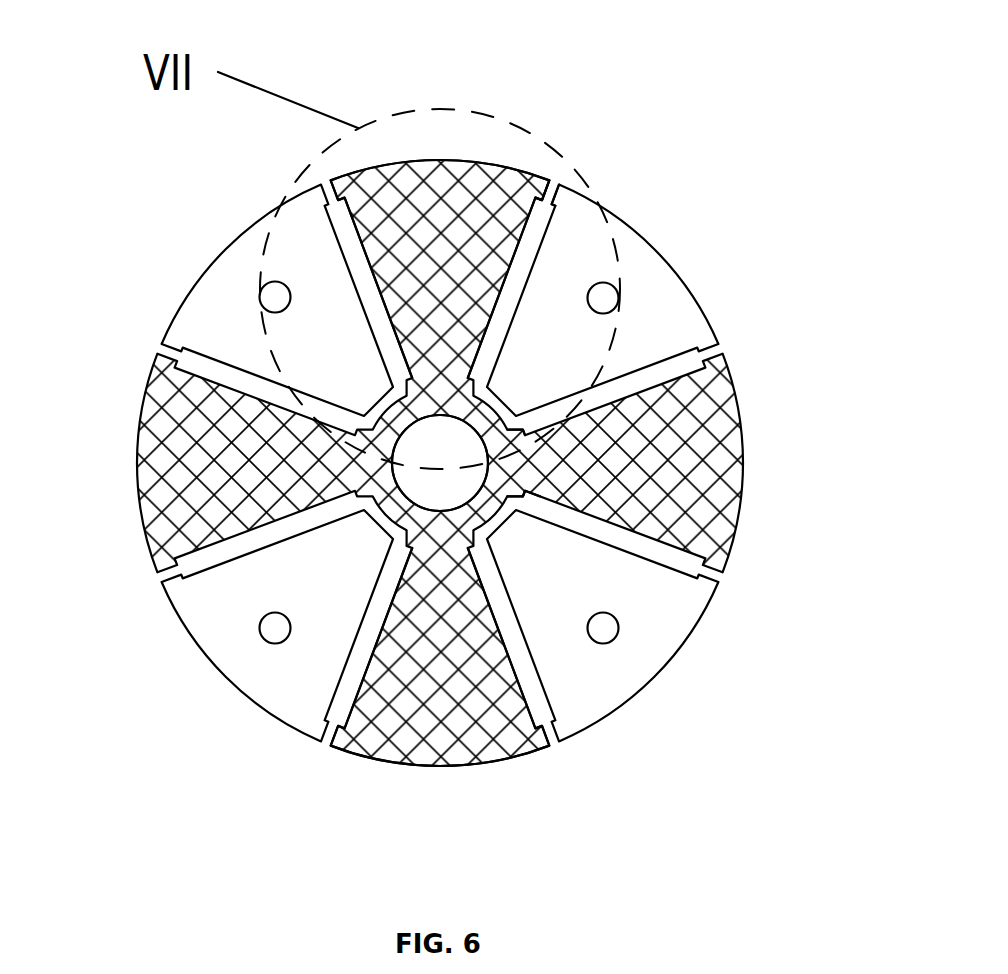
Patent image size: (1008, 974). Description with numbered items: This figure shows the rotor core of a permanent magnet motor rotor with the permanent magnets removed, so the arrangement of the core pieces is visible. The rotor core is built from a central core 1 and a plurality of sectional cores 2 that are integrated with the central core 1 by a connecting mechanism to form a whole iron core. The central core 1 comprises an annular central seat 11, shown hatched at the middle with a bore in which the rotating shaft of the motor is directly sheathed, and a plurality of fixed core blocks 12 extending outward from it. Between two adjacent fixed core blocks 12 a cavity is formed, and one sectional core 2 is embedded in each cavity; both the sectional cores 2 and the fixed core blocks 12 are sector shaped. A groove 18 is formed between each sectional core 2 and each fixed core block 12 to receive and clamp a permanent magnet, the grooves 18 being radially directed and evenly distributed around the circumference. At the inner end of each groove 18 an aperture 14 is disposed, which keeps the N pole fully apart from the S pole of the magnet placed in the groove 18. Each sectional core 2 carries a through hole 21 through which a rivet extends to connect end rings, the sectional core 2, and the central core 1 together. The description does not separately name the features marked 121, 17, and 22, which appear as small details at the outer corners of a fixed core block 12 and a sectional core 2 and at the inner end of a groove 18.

The central core 1 is at (235, 468).
The annular central seat 11 is at (497, 459).
The fixed core blocks 12 is at (417, 187).
The limiting protrusion 121 is at (538, 190).
The aperture 14 is at (520, 478).
The positioning step 17 is at (525, 492).
The groove 18 is at (370, 612).
The sectional cores 2 is at (640, 333).
The through hole 21 is at (608, 282).
The corner tab 22 is at (568, 190).